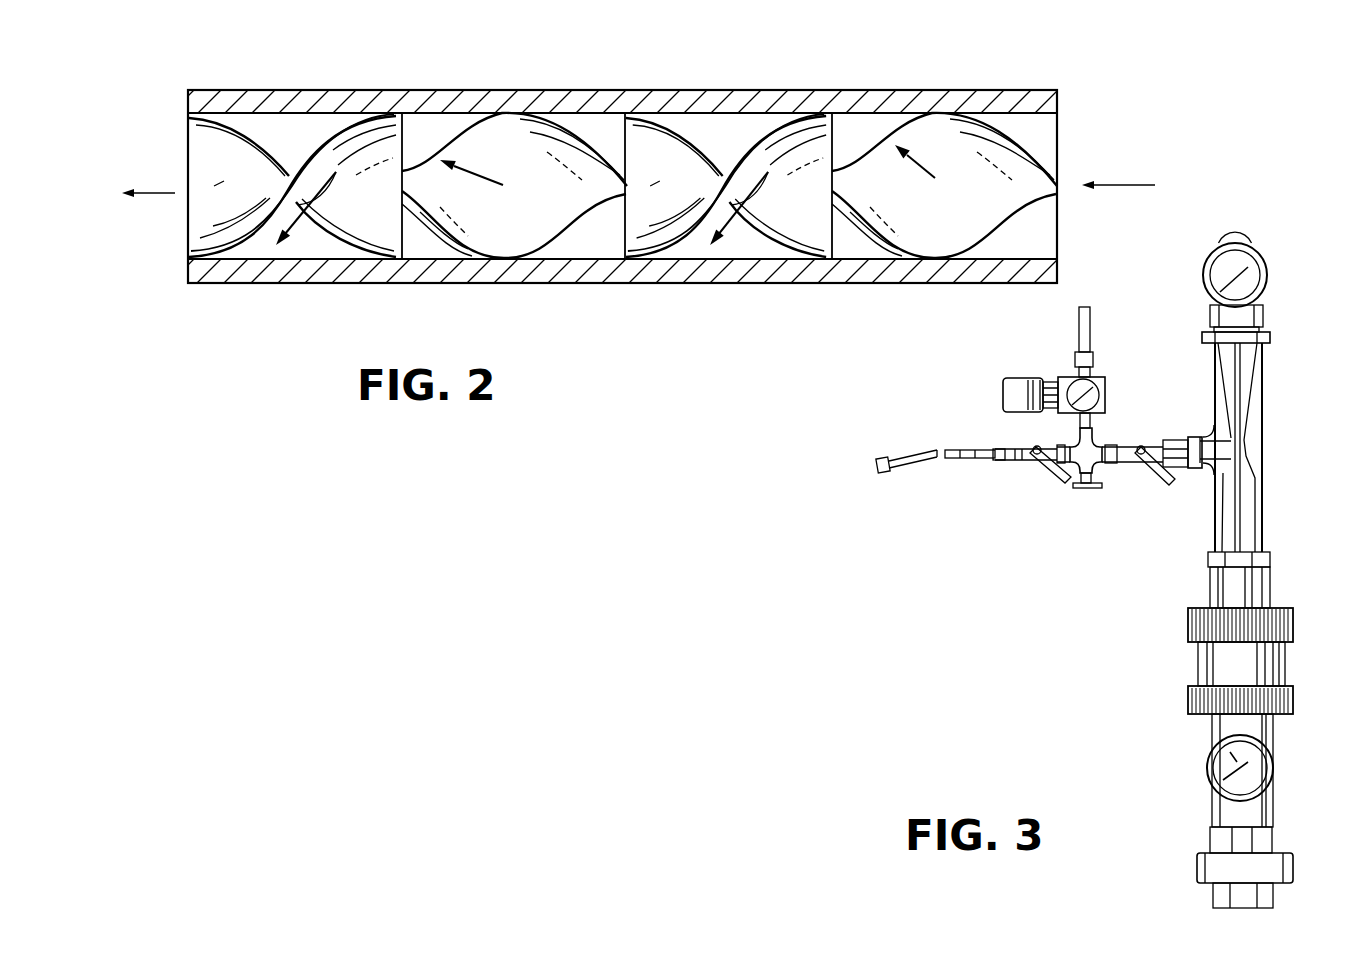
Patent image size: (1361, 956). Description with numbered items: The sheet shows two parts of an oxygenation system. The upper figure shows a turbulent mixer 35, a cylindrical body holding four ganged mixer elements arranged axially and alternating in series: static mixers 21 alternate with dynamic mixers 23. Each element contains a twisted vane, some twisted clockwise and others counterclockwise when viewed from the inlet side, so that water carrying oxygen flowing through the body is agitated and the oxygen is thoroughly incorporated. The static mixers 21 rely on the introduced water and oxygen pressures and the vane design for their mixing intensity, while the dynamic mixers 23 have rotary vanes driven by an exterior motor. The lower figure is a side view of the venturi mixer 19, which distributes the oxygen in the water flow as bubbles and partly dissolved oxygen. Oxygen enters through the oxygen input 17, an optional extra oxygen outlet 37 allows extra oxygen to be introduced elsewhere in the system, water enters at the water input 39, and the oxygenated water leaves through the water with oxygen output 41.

In FIG. 3, the oxygen input 17 is at (876, 462).
In FIG. 3, the venturi mixer 19 is at (1272, 385).
In FIG. 2, the static mixers 21 is at (515, 140).
In FIG. 2, the dynamic mixers 23 is at (252, 158).
In FIG. 2, the turbulent mixer 35 is at (680, 283).
In FIG. 3, the extra oxygen outlet 37 is at (1087, 320).
In FIG. 3, the water input 39 is at (1263, 908).
In FIG. 3, the water with oxygen output 41 is at (1243, 240).